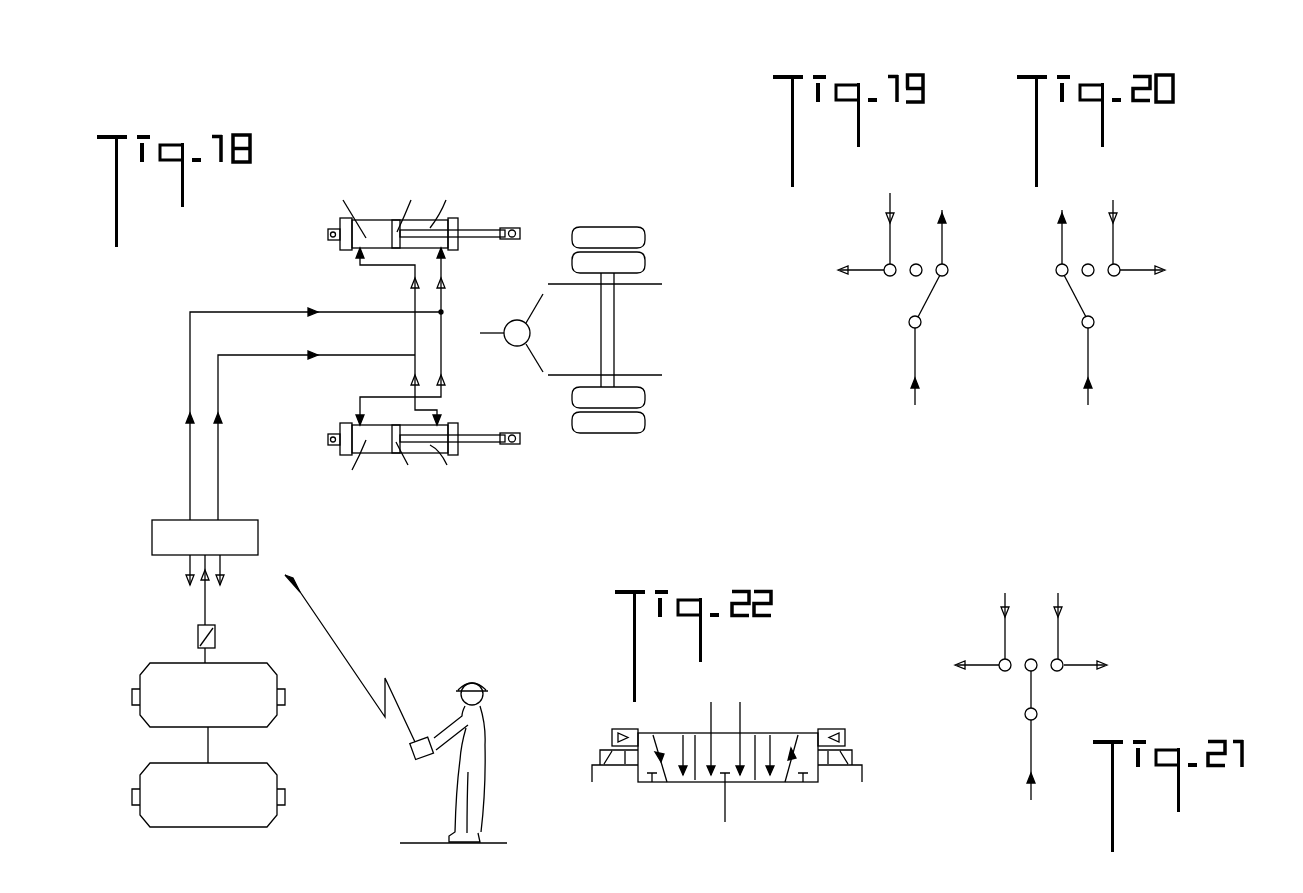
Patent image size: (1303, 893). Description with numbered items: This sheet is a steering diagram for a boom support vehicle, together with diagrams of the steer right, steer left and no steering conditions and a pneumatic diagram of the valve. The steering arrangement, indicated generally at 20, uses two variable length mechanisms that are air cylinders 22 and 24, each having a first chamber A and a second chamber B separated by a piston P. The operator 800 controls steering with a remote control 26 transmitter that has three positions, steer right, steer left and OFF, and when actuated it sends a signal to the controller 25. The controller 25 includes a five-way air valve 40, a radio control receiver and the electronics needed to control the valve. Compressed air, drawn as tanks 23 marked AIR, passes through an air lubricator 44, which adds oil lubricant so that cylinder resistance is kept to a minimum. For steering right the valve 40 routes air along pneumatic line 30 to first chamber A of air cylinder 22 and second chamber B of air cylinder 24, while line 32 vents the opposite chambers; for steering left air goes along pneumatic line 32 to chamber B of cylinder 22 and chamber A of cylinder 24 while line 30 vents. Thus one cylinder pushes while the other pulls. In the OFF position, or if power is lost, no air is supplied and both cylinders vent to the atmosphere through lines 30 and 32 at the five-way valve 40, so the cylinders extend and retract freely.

In FIG. 18, the steering cylinder assembly 20 is at (538, 188).
In FIG. 18, the air cylinder 22 is at (392, 448).
In FIG. 18, the air tanks 23 is at (250, 697).
In FIG. 18, the air cylinder 24 is at (372, 225).
In FIG. 18, the controller 25 is at (258, 545).
In FIG. 18, the remote control 26 is at (413, 760).
In FIG. 18, the pneumatic line 30 is at (218, 455).
In FIG. 19, the pneumatic line 30 is at (947, 226).
In FIG. 20, the pneumatic line 30 is at (1116, 230).
In FIG. 21, the pneumatic line 30 is at (1062, 620).
In FIG. 18, the pneumatic line 32 is at (190, 455).
In FIG. 19, the pneumatic line 32 is at (886, 227).
In FIG. 20, the pneumatic line 32 is at (1057, 232).
In FIG. 21, the pneumatic line 32 is at (1001, 630).
In FIG. 19, the 5-way air valve 40 is at (830, 230).
In FIG. 20, the 5-way air valve 40 is at (1180, 230).
In FIG. 21, the 5-way air valve 40 is at (1103, 597).
In FIG. 22, the 5-way air valve 40 is at (608, 702).
In FIG. 18, the air lubricator 44 is at (198, 641).
In FIG. 18, the boom support vehicle operator 800 is at (481, 770).